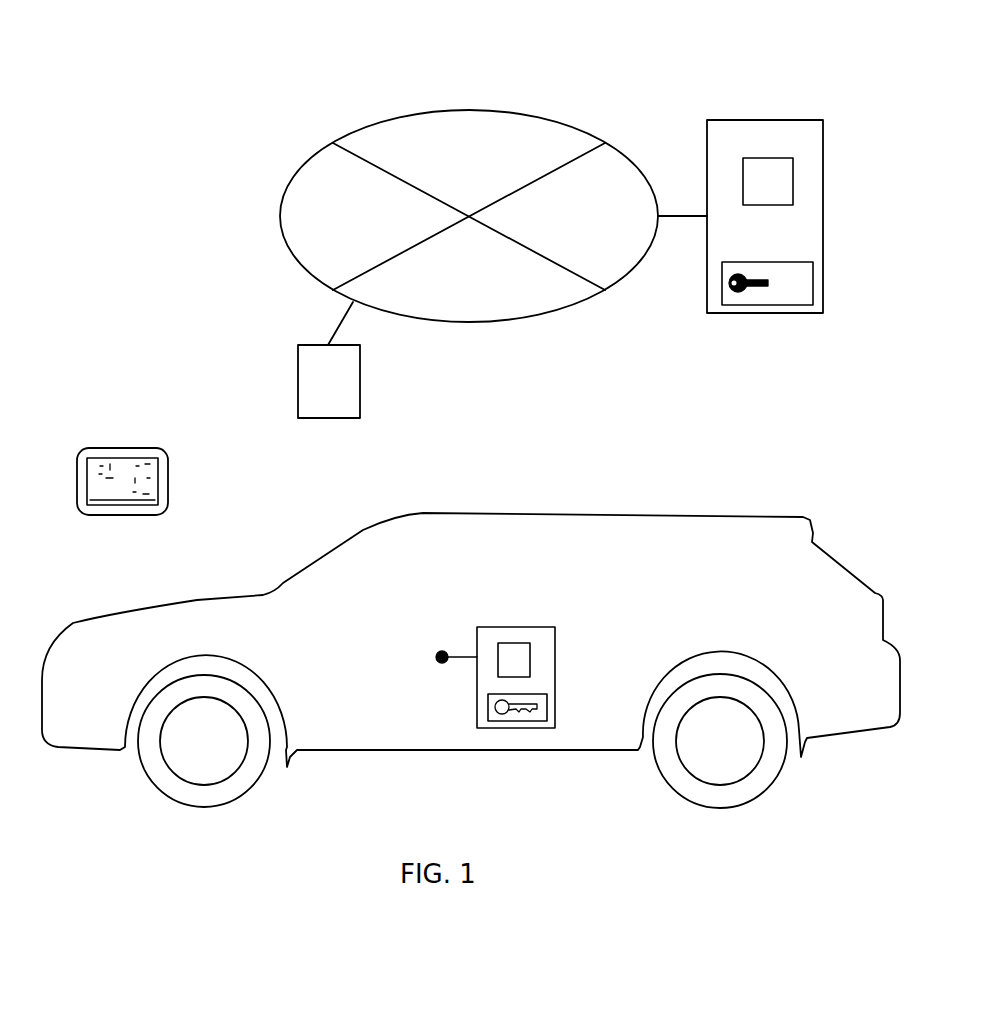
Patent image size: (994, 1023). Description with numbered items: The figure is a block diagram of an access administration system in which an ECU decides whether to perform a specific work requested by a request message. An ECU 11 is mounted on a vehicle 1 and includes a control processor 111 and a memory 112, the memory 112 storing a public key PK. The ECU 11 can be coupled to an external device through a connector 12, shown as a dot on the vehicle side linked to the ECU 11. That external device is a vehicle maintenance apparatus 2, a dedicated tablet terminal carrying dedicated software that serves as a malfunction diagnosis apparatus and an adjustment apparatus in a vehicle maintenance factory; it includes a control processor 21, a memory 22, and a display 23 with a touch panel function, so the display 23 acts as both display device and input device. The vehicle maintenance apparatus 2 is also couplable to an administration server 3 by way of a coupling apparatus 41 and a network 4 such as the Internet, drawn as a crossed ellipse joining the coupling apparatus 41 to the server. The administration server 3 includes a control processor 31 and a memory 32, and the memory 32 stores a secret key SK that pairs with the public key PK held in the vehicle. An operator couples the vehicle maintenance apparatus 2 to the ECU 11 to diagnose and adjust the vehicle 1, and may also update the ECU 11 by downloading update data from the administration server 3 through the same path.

The vehicle 1 is at (613, 491).
The ECU 11 is at (515, 637).
The control processor 111 is at (520, 663).
The memory 112 is at (537, 710).
The public key PK is at (502, 718).
The connector 12 is at (442, 650).
The vehicle maintenance apparatus 2 is at (175, 445).
The control processor 21 is at (102, 462).
The memory 22 is at (147, 477).
The display 23 is at (118, 498).
The administration server 3 is at (787, 108).
The control processor 31 is at (767, 183).
The memory 32 is at (797, 287).
The secret key SK is at (750, 290).
The network 4 is at (570, 120).
The coupling apparatus 41 is at (340, 387).